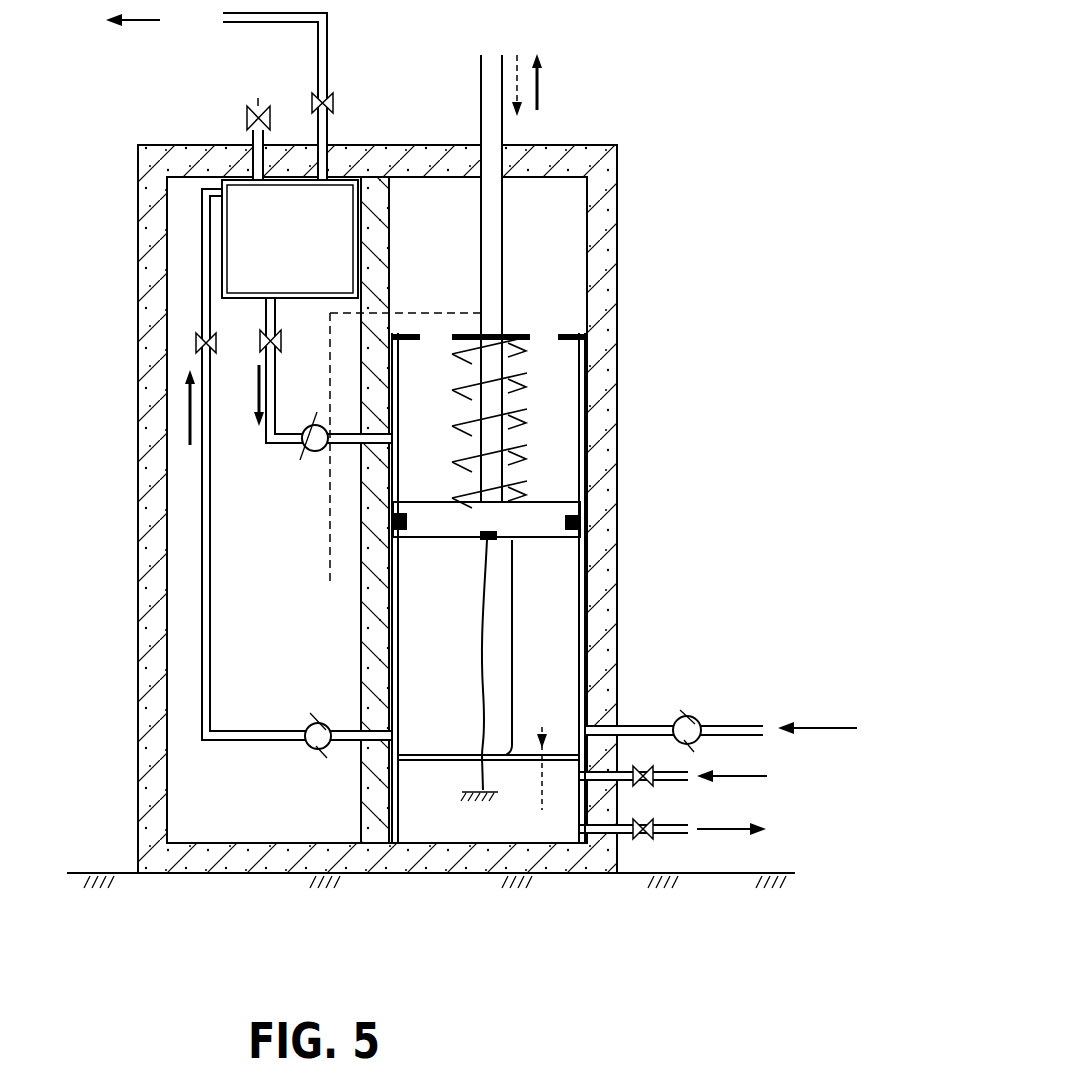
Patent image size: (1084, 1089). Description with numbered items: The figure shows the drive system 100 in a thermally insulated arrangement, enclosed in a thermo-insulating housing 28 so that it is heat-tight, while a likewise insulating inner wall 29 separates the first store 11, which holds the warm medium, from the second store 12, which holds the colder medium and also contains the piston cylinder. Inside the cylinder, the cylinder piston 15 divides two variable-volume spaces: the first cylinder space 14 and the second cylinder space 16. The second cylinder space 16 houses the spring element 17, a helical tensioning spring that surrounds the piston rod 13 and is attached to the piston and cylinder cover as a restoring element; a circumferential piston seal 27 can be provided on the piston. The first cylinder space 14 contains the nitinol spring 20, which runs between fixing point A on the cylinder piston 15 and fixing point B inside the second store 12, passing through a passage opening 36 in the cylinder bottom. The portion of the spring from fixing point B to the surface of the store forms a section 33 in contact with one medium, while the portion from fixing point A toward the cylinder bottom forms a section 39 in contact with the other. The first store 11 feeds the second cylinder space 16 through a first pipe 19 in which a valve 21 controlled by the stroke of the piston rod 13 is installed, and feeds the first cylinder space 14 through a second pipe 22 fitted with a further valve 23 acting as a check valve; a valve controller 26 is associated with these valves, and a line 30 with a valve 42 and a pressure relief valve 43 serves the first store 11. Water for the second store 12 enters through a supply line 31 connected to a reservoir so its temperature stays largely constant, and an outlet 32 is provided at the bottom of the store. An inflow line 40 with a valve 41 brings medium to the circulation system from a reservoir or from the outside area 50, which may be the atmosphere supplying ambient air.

The drive system 100 is at (656, 134).
The first store 11 is at (290, 239).
The second store 12 is at (465, 823).
The piston rod 13 is at (493, 283).
The first cylinder space 14 is at (547, 583).
The cylinder piston 15 is at (543, 517).
The second cylinder space 16 is at (548, 398).
The spring element 17 is at (527, 463).
The first pipe 19 is at (276, 398).
The nitinol spring 20 is at (490, 627).
The valve 21 is at (304, 464).
The second pipe 22 is at (210, 604).
The further valve 23 is at (310, 713).
The valve controller 26 is at (330, 548).
The piston seal 27 is at (587, 527).
The housing 28 is at (615, 205).
The inner wall 29 is at (360, 785).
The line 30 is at (317, 58).
The supply line 31 is at (656, 770).
The outlet 32 is at (655, 824).
The section 33 is at (552, 768).
The passage opening 36 is at (480, 753).
The section 39 is at (512, 643).
The inflow line 40 is at (730, 722).
The valve 41 is at (687, 713).
The valve 42 is at (333, 100).
The pressure relief valve 43 is at (247, 123).
The outside area 50 is at (891, 661).
The fixing point A is at (487, 537).
The fixing point B is at (477, 790).